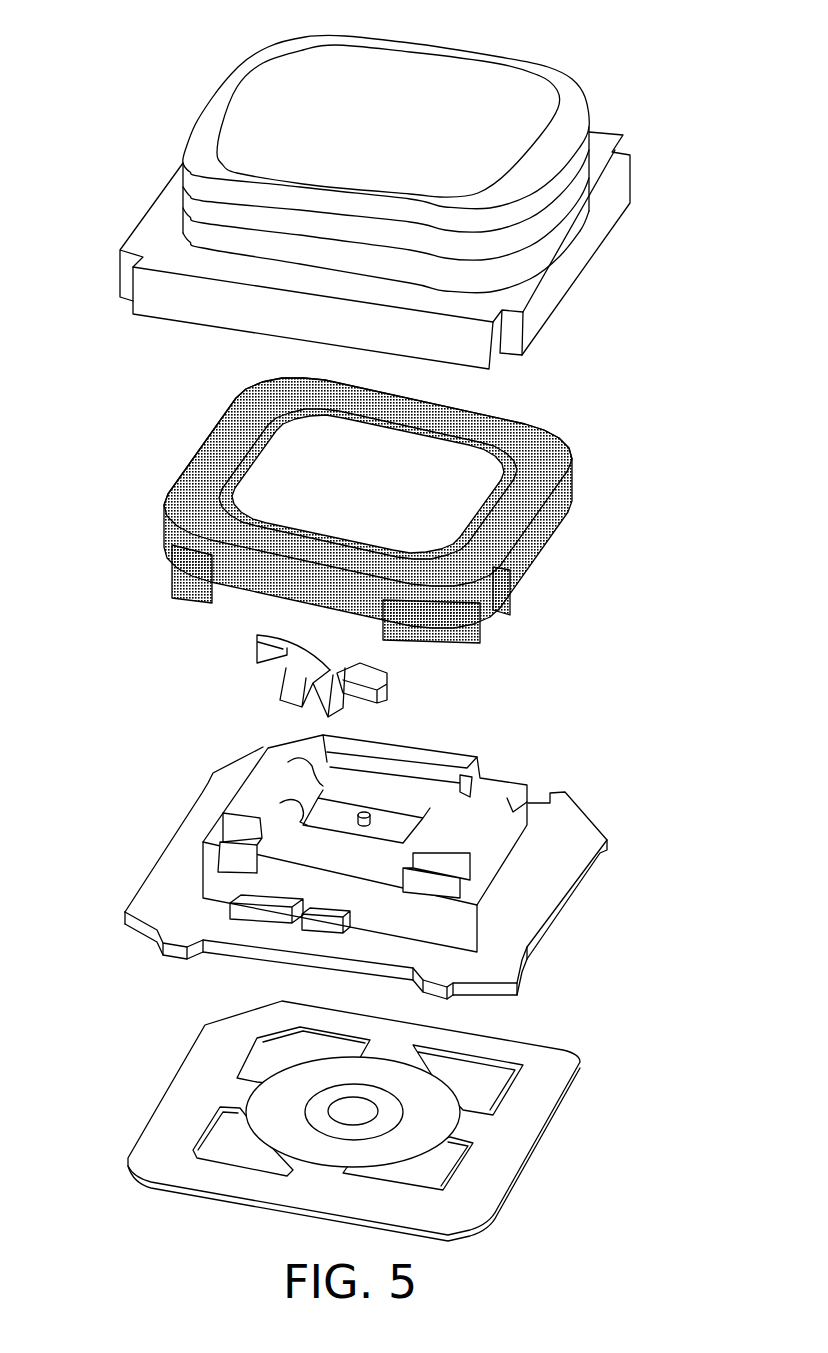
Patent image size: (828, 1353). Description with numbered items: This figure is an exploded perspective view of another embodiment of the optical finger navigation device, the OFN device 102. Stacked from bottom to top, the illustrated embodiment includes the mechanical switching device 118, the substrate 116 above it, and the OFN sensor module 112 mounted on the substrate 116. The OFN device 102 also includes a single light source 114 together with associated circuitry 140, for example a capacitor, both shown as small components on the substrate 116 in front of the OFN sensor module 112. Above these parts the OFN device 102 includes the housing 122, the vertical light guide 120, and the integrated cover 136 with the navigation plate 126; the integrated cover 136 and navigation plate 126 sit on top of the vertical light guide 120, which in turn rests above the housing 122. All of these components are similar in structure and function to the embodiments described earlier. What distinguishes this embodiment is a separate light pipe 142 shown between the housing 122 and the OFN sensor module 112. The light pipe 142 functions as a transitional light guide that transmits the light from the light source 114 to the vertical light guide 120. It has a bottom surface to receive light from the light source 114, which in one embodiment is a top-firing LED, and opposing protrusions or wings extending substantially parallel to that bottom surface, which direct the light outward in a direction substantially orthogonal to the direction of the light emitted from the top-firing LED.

The OFN device 102 is at (185, 50).
The OFN sensor module 112 is at (513, 800).
The light source 114 is at (315, 925).
The substrate 116 is at (512, 915).
The mechanical switching device 118 is at (497, 1160).
The vertical light guide 120 is at (552, 212).
The housing 122 is at (565, 435).
The navigation plate 126 is at (478, 90).
The integrated cover 136 is at (572, 90).
The associated circuitry 140 is at (250, 912).
The light pipe 142 is at (257, 650).